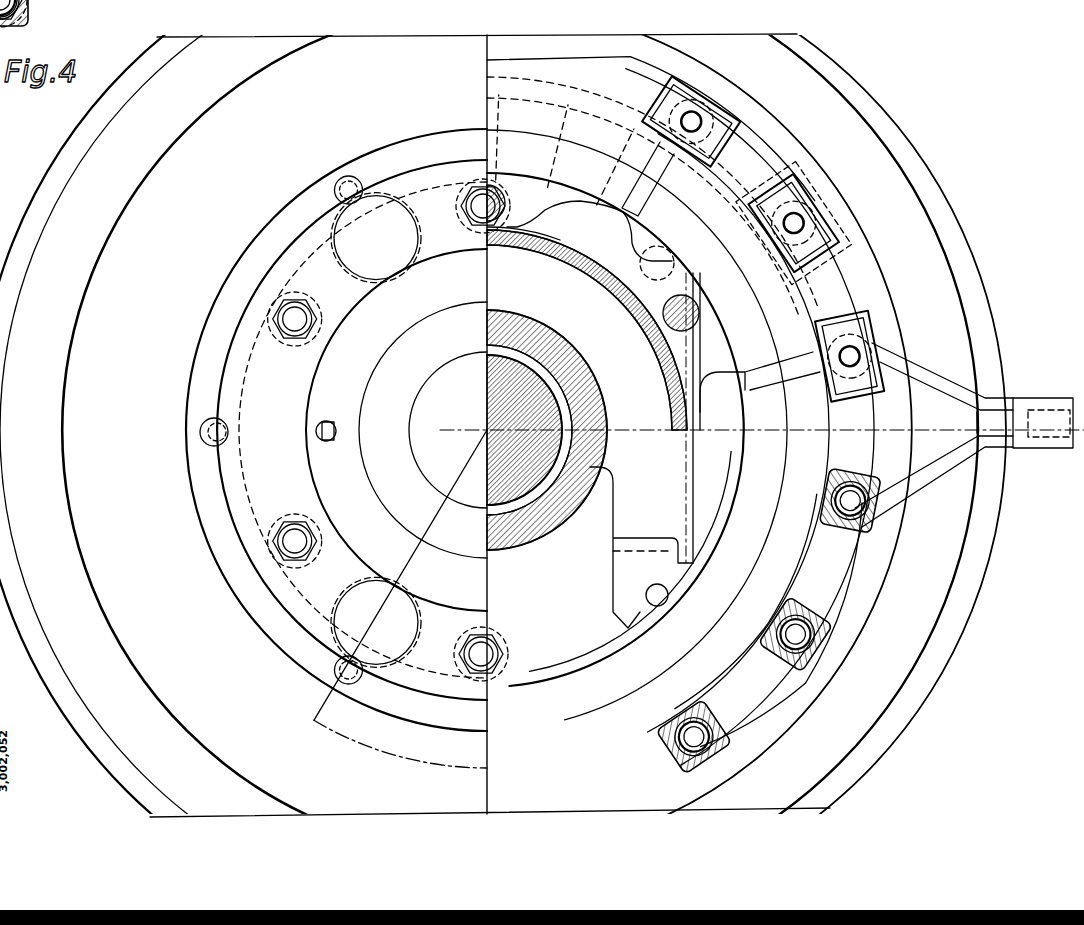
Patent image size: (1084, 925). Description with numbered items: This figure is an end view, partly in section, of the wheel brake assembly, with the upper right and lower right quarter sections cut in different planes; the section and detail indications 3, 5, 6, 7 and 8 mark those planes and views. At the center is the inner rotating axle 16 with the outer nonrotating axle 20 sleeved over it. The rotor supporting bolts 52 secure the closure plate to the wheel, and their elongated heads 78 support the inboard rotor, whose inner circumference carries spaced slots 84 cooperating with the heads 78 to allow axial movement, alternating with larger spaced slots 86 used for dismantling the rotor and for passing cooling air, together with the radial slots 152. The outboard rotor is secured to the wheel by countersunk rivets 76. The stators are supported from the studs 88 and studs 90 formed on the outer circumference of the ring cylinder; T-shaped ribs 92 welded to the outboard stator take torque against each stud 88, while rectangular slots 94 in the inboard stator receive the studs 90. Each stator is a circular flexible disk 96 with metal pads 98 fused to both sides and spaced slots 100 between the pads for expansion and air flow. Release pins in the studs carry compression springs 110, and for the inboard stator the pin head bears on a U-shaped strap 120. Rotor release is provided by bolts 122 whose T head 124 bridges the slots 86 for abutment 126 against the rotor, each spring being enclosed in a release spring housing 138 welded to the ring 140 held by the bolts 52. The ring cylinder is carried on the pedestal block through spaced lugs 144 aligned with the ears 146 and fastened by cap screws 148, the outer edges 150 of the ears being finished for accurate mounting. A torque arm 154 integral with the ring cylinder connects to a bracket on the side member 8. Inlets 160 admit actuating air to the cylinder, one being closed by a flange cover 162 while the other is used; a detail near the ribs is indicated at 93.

The section line 3- 3 is at (545, 44).
The section line 5- 5 is at (700, 637).
The section line 6- 6 is at (747, 60).
The section line 7- 7 is at (645, 100).
The side member 8 is at (742, 168).
The inner rotating axle 16 is at (485, 430).
The outer nonrotating axle 20 is at (520, 538).
The rotor supporting bolts 52 is at (291, 345).
The countersunk rivets 76 is at (346, 181).
The elongated heads 78 is at (483, 220).
The spaced slots 84 is at (490, 250).
The larger spaced slots 86 is at (537, 250).
The lugs or studs 88 is at (815, 193).
The lugs or studs 90 is at (706, 112).
The T-shaped ribs 92 is at (852, 250).
The bracket outline 93 is at (800, 160).
The rectangular slots 94 is at (673, 110).
The circular flexible disk 96 is at (598, 56).
The metal pads 98 is at (523, 112).
The spaced slots 100 is at (663, 170).
The compression springs 110 is at (785, 650).
The U-shaped strap 120 is at (734, 117).
The bolts 122 is at (710, 418).
The T head 124 is at (681, 398).
The abutment 126 is at (683, 371).
The release spring housing 138 is at (382, 210).
The ring 140 is at (243, 591).
The spaced lugs 144 is at (637, 603).
The ears or lugs 146 is at (623, 573).
The cap screws 148 is at (668, 590).
The outer edges 150 is at (674, 247).
The radial slots 152 is at (560, 133).
The torque arm 154 is at (985, 400).
The inlets 160 is at (800, 557).
The flange cover 162 is at (869, 303).